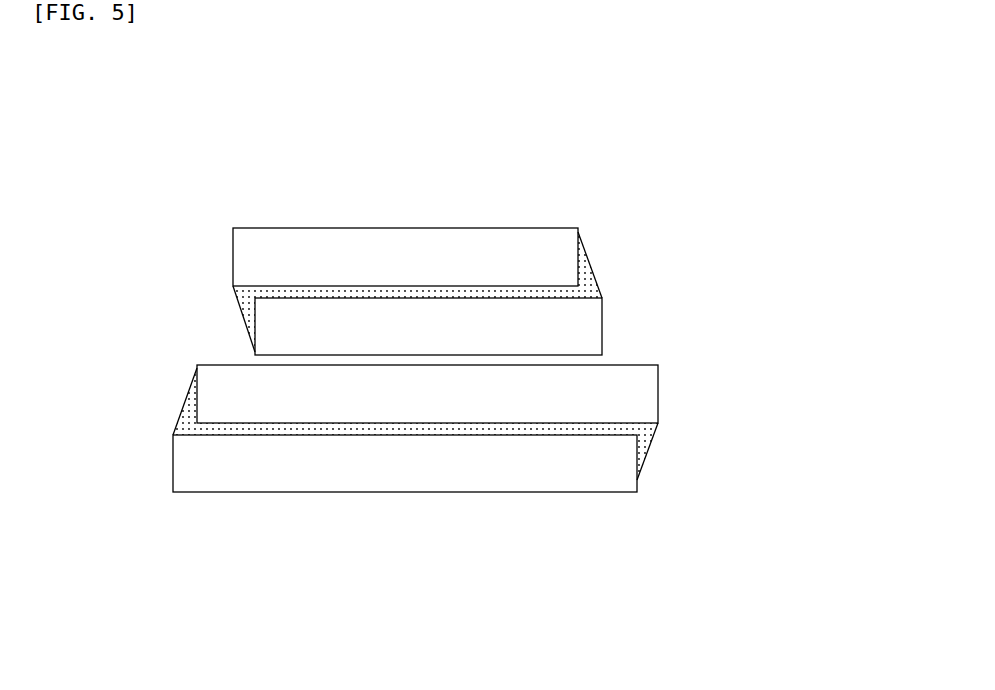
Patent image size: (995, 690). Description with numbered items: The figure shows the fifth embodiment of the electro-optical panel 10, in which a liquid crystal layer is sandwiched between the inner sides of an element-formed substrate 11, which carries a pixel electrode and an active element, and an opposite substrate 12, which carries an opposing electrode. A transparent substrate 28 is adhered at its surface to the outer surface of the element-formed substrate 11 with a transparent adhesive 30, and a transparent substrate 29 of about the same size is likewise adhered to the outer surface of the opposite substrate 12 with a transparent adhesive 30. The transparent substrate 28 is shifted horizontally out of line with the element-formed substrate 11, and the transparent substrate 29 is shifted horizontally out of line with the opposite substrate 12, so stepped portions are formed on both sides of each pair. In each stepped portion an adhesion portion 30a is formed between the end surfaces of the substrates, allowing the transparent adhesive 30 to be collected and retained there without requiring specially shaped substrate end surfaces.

The electro-optical panel 10 is at (183, 355).
The element-formed substrate 11 is at (658, 378).
The opposite substrate 12 is at (602, 336).
The transparent substrate 28 is at (332, 492).
The transparent substrate 29 is at (323, 228).
The transparent adhesive 30 is at (488, 283).
The adhesion portion 30a is at (592, 290).